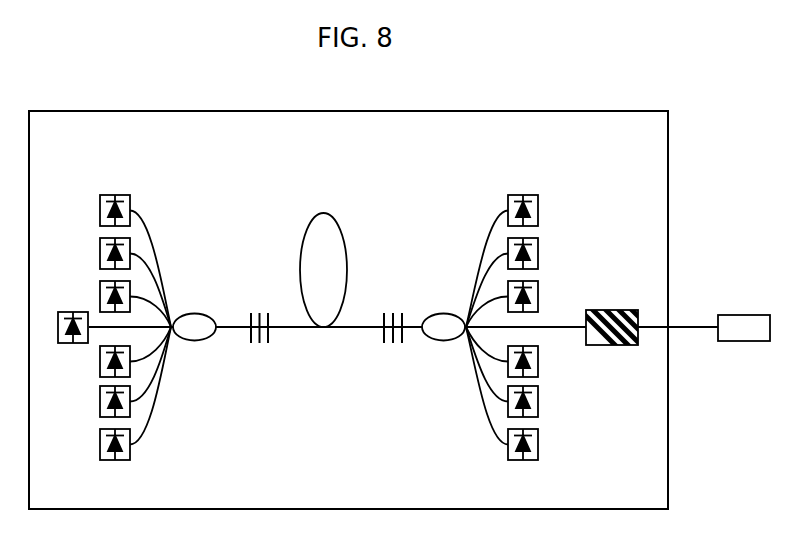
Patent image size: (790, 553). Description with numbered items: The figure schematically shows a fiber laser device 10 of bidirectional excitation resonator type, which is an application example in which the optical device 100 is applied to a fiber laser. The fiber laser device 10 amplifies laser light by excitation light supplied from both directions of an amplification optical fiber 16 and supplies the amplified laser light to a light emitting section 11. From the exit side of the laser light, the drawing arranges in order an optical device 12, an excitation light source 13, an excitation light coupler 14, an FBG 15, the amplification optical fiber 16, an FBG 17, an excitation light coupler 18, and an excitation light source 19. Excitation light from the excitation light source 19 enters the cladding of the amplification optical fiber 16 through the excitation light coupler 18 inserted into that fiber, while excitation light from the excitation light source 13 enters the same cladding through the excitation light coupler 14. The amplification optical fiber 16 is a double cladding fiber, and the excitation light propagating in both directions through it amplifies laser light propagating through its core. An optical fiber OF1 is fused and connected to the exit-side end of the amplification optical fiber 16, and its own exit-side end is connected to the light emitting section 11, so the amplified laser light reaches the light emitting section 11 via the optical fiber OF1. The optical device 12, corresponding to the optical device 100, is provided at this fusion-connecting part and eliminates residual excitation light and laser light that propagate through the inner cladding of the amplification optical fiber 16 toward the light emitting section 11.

The fiber laser device 10 is at (668, 177).
The light emitting section 11 is at (743, 315).
The optical device 12 is at (612, 310).
The optical device 100 is at (621, 293).
The excitation light source 13 is at (523, 195).
The excitation light coupler 14 is at (441, 314).
The FBG 15 is at (390, 300).
The amplification optical fiber 16 is at (322, 213).
The FBG 17 is at (256, 300).
The excitation light coupler 18 is at (193, 314).
The excitation light source 19 is at (119, 195).
The optical fiber OF1 is at (695, 330).